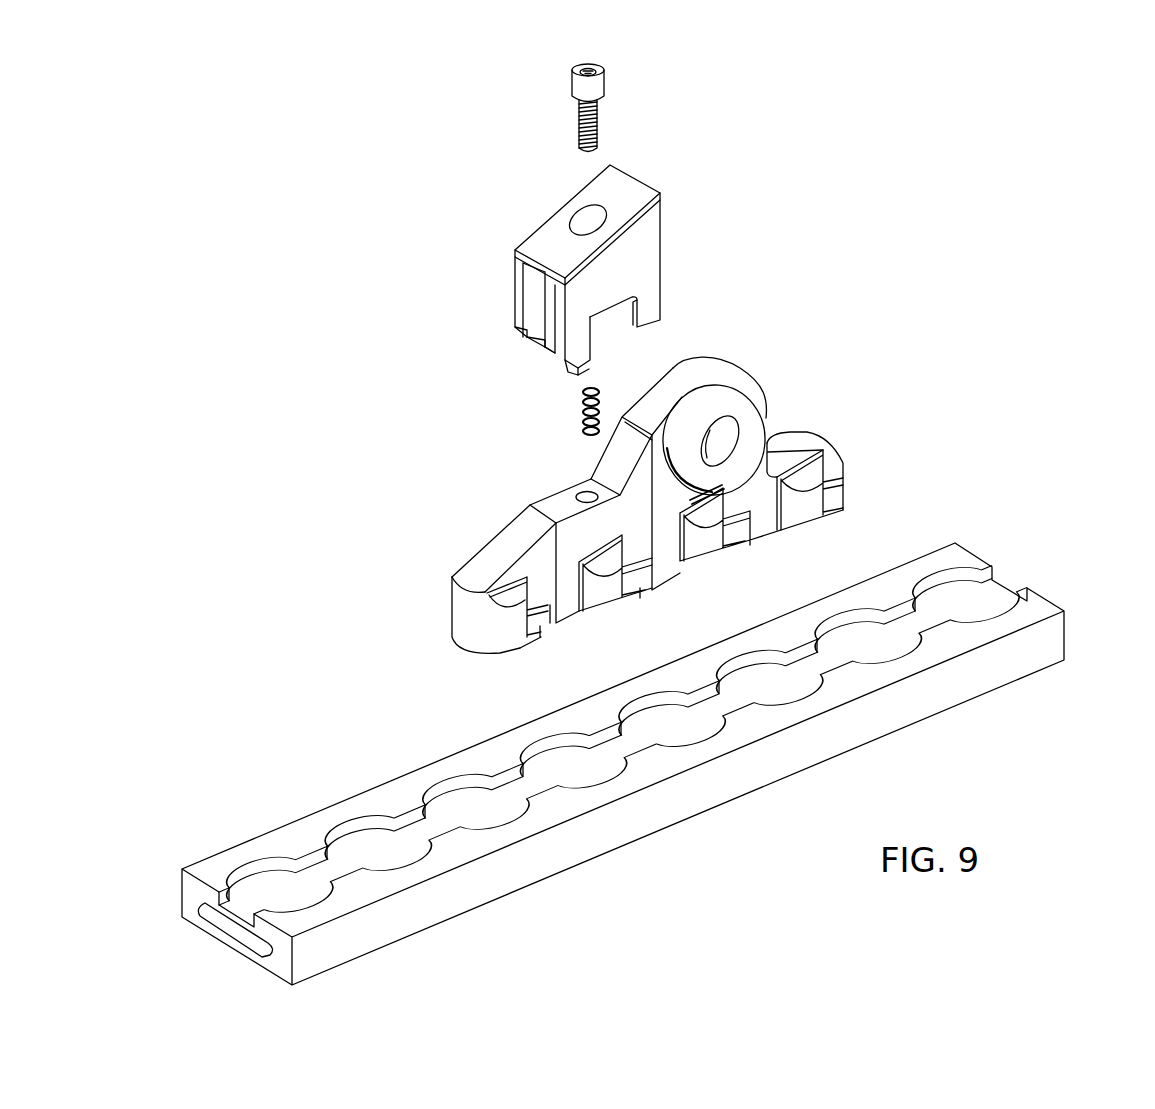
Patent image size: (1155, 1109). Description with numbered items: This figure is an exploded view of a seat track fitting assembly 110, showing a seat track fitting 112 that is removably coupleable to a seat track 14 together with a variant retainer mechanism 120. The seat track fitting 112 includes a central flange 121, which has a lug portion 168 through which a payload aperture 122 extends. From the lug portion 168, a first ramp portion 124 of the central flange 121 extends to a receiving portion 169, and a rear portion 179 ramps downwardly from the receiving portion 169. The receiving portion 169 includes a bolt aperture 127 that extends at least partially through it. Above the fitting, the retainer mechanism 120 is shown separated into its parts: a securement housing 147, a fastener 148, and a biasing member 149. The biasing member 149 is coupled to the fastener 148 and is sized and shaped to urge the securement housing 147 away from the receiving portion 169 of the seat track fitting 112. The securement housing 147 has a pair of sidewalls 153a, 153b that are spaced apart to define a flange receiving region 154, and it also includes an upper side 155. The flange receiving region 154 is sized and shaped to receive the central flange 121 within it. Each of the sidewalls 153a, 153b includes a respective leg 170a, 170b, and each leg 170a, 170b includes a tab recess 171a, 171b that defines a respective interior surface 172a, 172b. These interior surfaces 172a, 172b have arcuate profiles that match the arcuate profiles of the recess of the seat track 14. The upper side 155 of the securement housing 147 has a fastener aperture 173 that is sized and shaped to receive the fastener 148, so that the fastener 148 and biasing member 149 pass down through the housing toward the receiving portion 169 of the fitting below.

The seat track 14 is at (1056, 642).
The seat track fitting assembly 110 is at (1050, 316).
The seat track fitting 112 is at (851, 463).
The retainer mechanism 120 is at (722, 188).
The central flange 121 is at (605, 487).
The payload aperture 122 is at (722, 439).
The first ramp portion 124 is at (605, 468).
The bolt aperture 127 is at (580, 494).
The securement housing 147 is at (577, 284).
The fastener 148 is at (604, 88).
The biasing member 149 is at (600, 387).
The sidewall 153a is at (650, 258).
The sidewall 153b is at (476, 292).
The flange receiving region 154 is at (545, 349).
The upper side 155 is at (598, 205).
The lug portion 168 is at (747, 412).
The receiving portion 169 is at (536, 486).
The leg 170a is at (550, 364).
The leg 170b is at (528, 278).
The tab recess 171a is at (552, 373).
The tab recess 171b is at (517, 338).
The interior surface 172a is at (574, 362).
The interior surface 172b is at (513, 327).
The fastener aperture 173 is at (597, 209).
The rear portion 179 is at (455, 580).